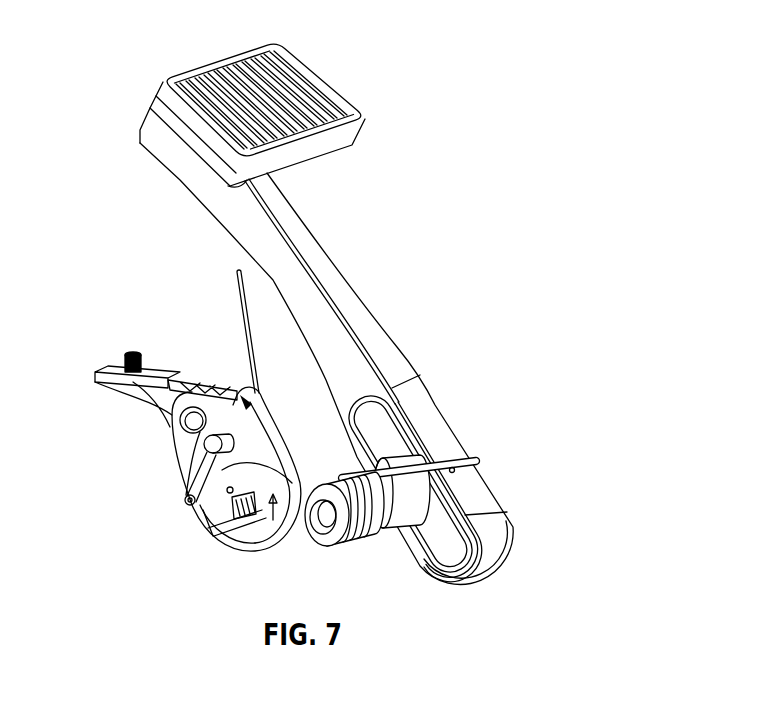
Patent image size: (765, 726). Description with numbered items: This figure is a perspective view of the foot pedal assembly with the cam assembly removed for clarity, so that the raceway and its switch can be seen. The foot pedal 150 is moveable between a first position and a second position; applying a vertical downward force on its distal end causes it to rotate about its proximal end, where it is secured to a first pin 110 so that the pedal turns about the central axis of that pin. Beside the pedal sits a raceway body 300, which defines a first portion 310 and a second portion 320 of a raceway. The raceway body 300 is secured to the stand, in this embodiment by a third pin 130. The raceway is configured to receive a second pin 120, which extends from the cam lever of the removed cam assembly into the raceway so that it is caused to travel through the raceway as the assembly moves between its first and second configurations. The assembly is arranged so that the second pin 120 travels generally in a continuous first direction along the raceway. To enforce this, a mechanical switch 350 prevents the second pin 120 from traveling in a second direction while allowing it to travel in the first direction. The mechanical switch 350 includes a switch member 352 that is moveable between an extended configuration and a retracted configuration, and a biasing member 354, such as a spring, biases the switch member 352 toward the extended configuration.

The foot pedal 150 is at (364, 301).
The first pin 110 is at (323, 523).
The raceway body 300 is at (263, 438).
The third pin 130 is at (147, 405).
The second pin 120 is at (178, 437).
The biasing member 354 is at (200, 452).
The switch member 352 is at (195, 474).
The mechanical switch 350 is at (188, 508).
The second portion of the raceway 320 is at (223, 542).
The first portion of the raceway 310 is at (267, 537).